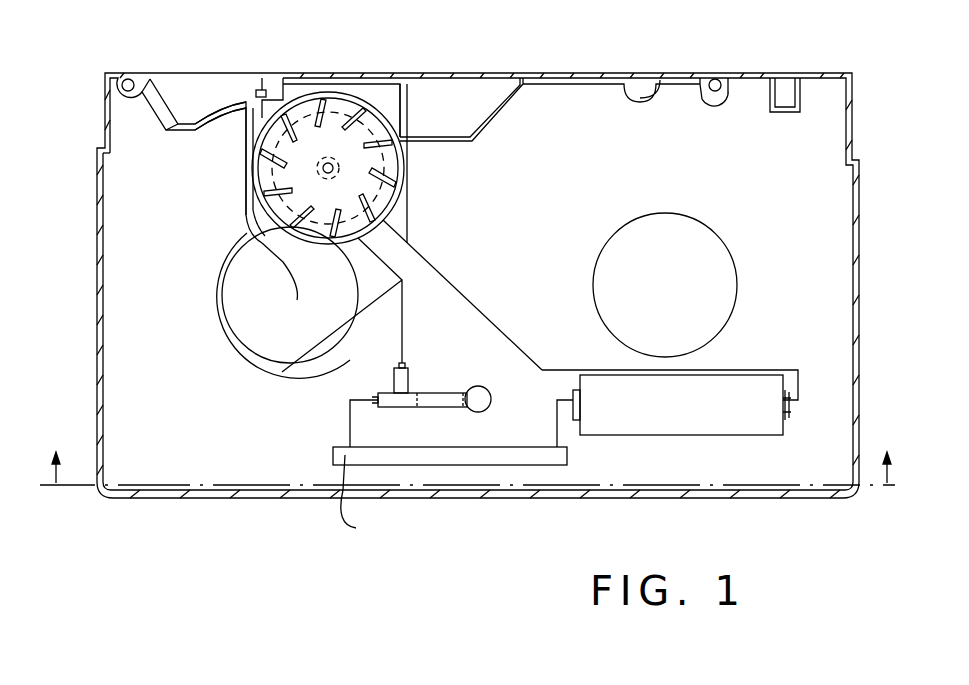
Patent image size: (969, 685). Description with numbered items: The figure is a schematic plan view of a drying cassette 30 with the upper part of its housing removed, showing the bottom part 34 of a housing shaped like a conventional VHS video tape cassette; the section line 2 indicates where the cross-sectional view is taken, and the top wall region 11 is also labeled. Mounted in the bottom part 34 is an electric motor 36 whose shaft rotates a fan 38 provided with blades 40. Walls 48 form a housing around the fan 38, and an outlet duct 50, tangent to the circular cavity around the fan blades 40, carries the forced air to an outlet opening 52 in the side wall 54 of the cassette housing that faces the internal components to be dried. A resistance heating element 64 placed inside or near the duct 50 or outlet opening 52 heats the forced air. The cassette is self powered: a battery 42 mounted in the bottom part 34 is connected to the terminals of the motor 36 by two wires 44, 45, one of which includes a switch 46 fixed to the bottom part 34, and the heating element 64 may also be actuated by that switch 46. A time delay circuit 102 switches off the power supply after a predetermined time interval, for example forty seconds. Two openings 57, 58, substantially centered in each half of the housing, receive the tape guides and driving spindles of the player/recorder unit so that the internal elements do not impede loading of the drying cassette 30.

The drying cassette 30 is at (770, 63).
The bottom part 34 is at (840, 155).
The top wall 11 is at (548, 78).
The side wall 54 is at (216, 103).
The outlet opening 52 is at (268, 112).
The outlet duct 50 is at (270, 140).
The resistance heating element 64 is at (262, 90).
The walls 48 is at (250, 210).
The electric motor 36 is at (338, 97).
The blades 40 is at (375, 100).
The fan 38 is at (397, 104).
The opening 57 is at (233, 327).
The opening 58 is at (622, 232).
The switch 46 is at (460, 372).
The wire 45 is at (557, 420).
The wire 44 is at (800, 382).
The battery 42 is at (697, 417).
The time delay circuit 102 is at (333, 455).
The section line 2- 2 is at (467, 452).